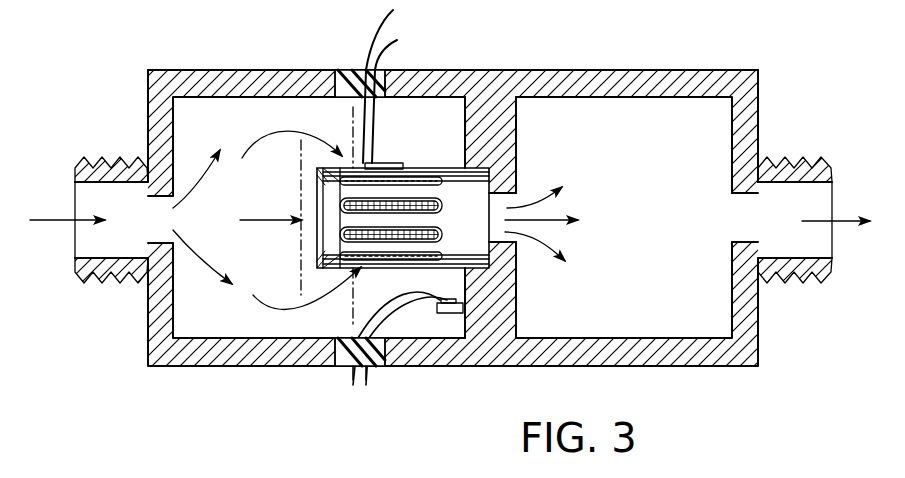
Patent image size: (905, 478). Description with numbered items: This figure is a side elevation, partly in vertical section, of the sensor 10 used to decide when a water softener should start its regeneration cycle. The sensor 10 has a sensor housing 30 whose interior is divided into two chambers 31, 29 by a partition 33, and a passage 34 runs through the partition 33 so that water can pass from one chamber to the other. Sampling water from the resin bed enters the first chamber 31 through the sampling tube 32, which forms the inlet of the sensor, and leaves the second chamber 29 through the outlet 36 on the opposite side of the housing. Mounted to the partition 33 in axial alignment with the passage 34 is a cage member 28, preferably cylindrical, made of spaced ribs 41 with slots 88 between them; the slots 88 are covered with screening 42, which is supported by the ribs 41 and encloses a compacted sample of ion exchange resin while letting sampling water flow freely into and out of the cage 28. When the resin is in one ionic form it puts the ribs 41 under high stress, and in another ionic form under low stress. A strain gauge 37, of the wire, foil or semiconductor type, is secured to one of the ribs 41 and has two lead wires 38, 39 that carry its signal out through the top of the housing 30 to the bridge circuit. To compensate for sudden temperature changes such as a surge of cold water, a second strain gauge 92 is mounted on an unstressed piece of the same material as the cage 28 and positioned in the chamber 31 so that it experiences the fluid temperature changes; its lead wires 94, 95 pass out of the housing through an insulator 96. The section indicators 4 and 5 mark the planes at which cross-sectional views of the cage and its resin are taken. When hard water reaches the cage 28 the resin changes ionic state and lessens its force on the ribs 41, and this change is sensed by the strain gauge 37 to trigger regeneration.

The sensor 10 is at (259, 66).
The cage member 28 is at (447, 168).
The chamber 29 is at (716, 128).
The sensor housing 30 is at (172, 69).
The chamber 31 is at (188, 305).
The sampling tube 32 is at (93, 157).
The partition 33 is at (508, 142).
The passage 34 is at (508, 200).
The outlet fitting 36 is at (826, 162).
The strain gauge 37 is at (383, 163).
The lead wire 38 is at (380, 50).
The lead wire 39 is at (368, 42).
The ribs 41 is at (367, 218).
The screening 42 is at (352, 237).
The slots 88 is at (418, 181).
The second strain gauge 92 is at (447, 314).
The lead wire 94 is at (350, 376).
The lead wire 95 is at (366, 385).
The insulator 96 is at (376, 372).
The section line 4- 4 is at (300, 158).
The section line 5- 5 is at (352, 123).